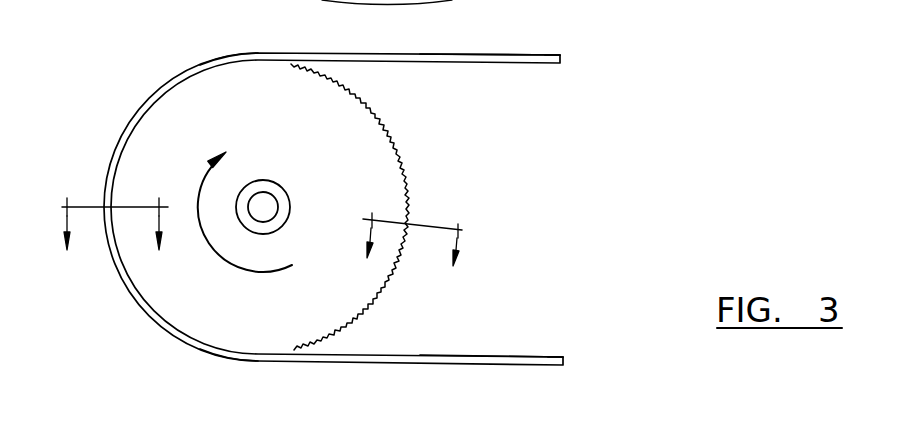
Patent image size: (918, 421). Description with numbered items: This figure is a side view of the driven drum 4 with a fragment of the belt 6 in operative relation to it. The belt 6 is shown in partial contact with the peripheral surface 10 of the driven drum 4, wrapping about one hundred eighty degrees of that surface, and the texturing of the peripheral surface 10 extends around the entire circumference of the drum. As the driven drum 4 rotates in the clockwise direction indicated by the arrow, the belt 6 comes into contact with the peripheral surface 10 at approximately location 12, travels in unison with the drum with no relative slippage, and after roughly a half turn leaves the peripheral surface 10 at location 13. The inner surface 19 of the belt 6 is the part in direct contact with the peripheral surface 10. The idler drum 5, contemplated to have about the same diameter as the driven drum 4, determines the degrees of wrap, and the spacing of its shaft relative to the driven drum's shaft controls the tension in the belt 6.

The driven drum 4 is at (192, 308).
The idler drum 5 is at (406, 253).
The belt 6 is at (552, 55).
The peripheral surface 10 is at (393, 143).
The location 12 is at (261, 362).
The location 13 is at (298, 52).
The inner surface 19 is at (465, 63).